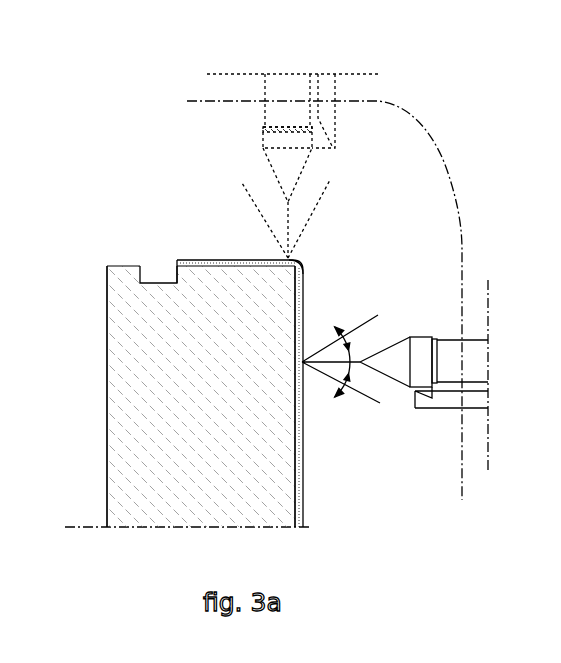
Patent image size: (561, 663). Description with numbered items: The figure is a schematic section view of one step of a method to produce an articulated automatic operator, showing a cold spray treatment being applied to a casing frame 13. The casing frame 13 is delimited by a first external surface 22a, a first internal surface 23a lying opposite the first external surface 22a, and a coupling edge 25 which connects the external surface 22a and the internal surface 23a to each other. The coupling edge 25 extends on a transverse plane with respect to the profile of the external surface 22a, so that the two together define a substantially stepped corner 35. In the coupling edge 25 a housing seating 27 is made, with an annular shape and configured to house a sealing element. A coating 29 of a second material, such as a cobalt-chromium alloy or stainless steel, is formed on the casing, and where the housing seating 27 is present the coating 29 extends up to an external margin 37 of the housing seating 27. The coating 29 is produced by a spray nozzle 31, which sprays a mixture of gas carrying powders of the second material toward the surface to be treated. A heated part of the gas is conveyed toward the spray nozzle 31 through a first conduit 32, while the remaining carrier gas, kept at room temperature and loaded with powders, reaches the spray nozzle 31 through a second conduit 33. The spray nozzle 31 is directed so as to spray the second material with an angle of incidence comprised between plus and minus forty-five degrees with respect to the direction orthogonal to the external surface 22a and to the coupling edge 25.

The casing frame 13 is at (125, 377).
The first external surface 22a is at (295, 462).
The first internal surface 23a is at (107, 320).
The coupling edge 25 is at (219, 266).
The housing seating 27 is at (143, 275).
The coating 29 is at (298, 490).
The spray nozzle 31 is at (278, 165).
The first conduit 32 is at (327, 117).
The second conduit 33 is at (278, 86).
The stepped corner 35 is at (295, 266).
The external margin 37 is at (178, 265).